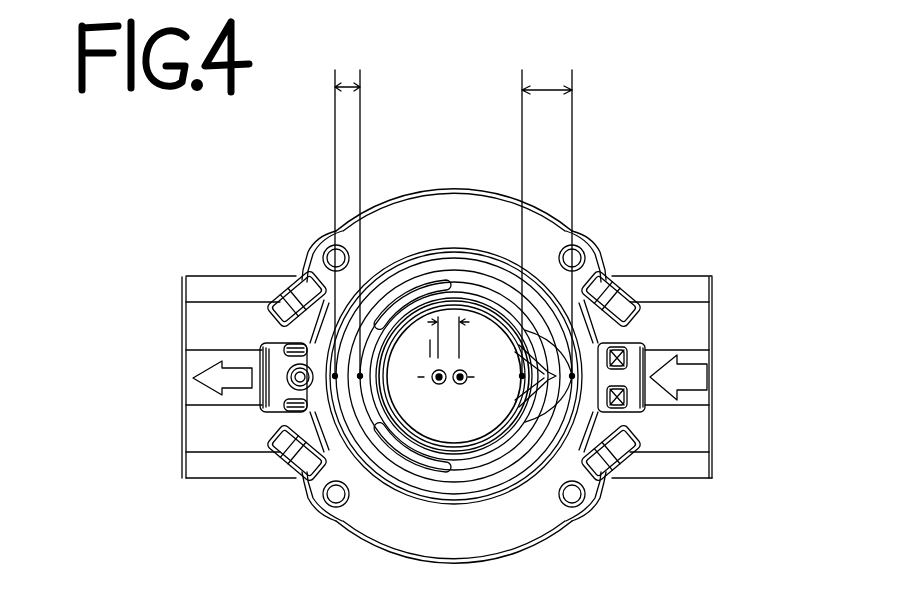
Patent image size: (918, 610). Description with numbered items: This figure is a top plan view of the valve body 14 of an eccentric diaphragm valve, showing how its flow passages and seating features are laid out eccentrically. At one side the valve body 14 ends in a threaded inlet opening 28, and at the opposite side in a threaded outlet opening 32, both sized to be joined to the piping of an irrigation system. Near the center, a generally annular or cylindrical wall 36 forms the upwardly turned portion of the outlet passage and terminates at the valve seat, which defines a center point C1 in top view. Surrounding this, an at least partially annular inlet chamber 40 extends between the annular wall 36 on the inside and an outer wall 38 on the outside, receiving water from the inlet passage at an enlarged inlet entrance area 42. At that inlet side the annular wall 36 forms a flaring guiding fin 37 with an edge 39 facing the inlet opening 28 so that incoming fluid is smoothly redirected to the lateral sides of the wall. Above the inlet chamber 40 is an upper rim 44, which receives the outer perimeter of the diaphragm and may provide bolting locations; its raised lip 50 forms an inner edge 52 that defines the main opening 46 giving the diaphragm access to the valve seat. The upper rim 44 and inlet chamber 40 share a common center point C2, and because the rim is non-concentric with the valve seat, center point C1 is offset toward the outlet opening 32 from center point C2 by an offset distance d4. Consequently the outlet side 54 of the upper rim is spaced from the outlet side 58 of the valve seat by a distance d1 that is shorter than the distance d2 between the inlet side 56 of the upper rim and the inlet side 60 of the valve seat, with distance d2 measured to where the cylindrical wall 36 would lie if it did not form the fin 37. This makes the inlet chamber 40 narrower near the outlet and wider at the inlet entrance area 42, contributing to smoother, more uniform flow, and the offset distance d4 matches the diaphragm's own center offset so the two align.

The valve body 14 is at (640, 112).
The inlet opening 28 is at (712, 292).
The outlet opening 32 is at (186, 330).
The annular wall 36 is at (483, 490).
The guiding fin 37 is at (600, 497).
The outer wall 38 is at (437, 540).
The edge 39 is at (622, 286).
The inlet chamber 40 is at (445, 270).
The inlet entrance area 42 is at (600, 423).
The upper rim 44 is at (537, 502).
The main opening 46 is at (477, 405).
The raised lip 50 is at (457, 497).
The inner edge 52 is at (420, 490).
The outlet side of the upper rim 54 is at (285, 428).
The inlet side of the upper rim 56 is at (575, 385).
The outlet side of the valve seat 58 is at (357, 487).
The inlet side of the valve seat 60 is at (505, 392).
The center point of the valve seat C1 is at (434, 372).
The center point of the upper rim and inlet chamber C2 is at (446, 384).
The distance between outlet side of upper rim and outlet side of valve seat d1 is at (337, 84).
The distance between inlet side of upper rim and inlet side of valve seat d2 is at (541, 86).
The offset distance between center points d4 is at (439, 337).